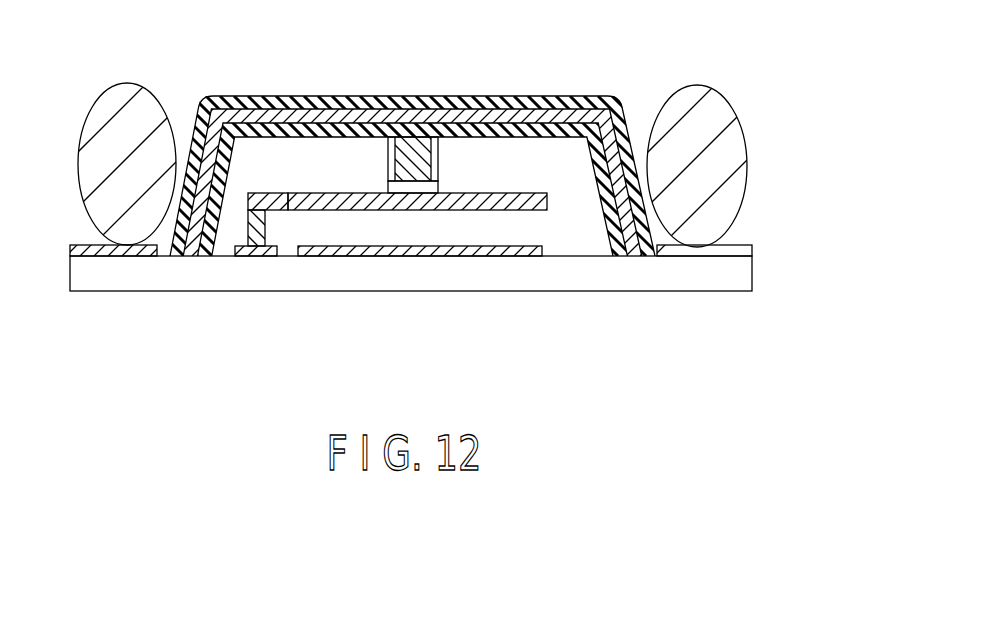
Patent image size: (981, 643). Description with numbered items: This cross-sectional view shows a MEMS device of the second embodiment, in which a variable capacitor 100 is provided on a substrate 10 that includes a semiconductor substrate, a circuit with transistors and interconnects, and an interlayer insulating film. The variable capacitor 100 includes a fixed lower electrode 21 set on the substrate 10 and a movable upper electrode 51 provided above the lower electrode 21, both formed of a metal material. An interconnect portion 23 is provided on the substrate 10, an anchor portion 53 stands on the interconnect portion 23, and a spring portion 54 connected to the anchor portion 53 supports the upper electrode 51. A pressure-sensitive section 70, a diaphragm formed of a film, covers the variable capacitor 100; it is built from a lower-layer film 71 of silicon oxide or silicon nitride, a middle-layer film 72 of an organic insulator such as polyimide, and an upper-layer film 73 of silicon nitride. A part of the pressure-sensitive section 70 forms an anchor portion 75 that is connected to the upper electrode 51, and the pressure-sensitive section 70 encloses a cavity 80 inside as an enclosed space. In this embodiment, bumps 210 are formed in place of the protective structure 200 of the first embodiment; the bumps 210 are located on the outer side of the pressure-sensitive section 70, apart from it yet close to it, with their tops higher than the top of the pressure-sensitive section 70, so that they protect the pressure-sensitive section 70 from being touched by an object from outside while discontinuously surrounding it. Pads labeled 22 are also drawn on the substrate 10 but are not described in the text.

The substrate 10 is at (190, 292).
The lower electrode 21 is at (426, 257).
The external terminal pad 22 is at (131, 251).
The interconnect portion 23 is at (251, 251).
The upper electrode 51 is at (520, 208).
The anchor portion 53 is at (265, 222).
The spring portion 54 is at (260, 191).
The pressure-sensitive section 70 is at (412, 129).
The lower-layer film 71 is at (363, 108).
The middle-layer film 72 is at (414, 110).
The upper-layer film 73 is at (345, 55).
The anchor portion 75 is at (392, 178).
The cavity 80 is at (570, 219).
The variable capacitor 100 is at (412, 187).
The protective structure 200 is at (410, 191).
The bump 210 is at (125, 85).